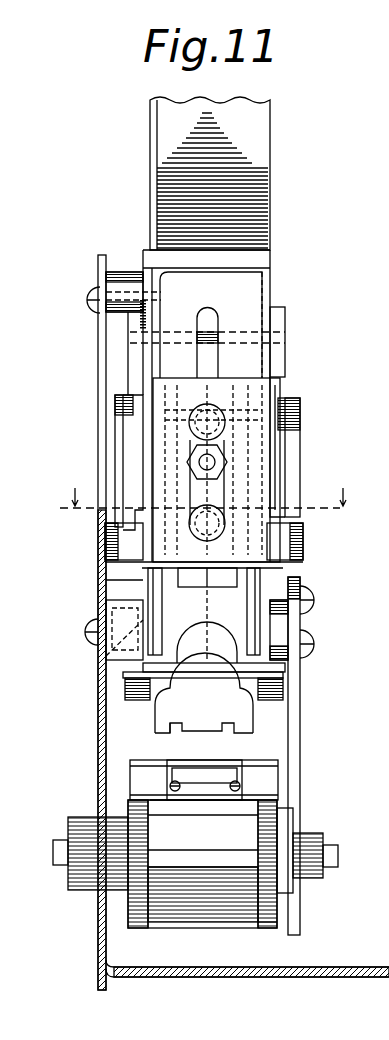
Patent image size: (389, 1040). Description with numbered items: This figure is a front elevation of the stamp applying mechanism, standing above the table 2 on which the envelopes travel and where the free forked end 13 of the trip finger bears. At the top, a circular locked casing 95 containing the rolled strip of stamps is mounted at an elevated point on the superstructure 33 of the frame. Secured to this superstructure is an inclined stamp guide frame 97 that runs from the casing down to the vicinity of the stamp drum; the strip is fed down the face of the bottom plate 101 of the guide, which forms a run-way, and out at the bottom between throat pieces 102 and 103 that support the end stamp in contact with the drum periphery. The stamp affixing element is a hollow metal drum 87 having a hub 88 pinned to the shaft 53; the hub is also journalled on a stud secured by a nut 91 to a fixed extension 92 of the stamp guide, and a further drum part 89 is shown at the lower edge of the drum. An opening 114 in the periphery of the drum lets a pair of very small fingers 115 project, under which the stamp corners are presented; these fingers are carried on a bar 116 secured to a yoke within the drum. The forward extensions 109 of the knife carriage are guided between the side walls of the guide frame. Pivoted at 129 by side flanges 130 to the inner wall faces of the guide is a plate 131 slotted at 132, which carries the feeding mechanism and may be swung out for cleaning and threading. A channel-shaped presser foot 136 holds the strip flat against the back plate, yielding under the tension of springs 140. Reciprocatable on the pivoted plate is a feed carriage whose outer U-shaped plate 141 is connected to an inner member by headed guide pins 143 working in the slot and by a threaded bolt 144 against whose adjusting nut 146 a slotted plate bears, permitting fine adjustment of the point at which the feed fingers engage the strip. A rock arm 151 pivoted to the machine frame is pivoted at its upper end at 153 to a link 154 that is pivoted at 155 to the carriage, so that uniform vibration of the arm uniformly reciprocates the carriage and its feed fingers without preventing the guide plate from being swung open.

The table 2 is at (308, 976).
The free forked end 13 is at (206, 502).
The superstructure 33 is at (106, 276).
The shaft 53 is at (54, 844).
The hollow metal drum 87 is at (276, 917).
The hub 88 is at (77, 820).
The roller flange 89 is at (260, 925).
The nut 91 is at (322, 838).
The fixed extension 92 is at (300, 744).
The circular locked casing 95 is at (268, 200).
The inclined stamp guide frame 97 is at (110, 580).
The bottom plate 101 is at (296, 632).
The throat piece 102 is at (160, 722).
The throat piece 103 is at (228, 714).
The forward extensions 109 is at (123, 688).
The opening 114 is at (276, 778).
The fingers 115 is at (234, 767).
The bar 116 is at (210, 790).
The pivot 129 is at (105, 658).
The side flanges 130 is at (106, 614).
The plate 131 is at (282, 362).
The slot 132 is at (218, 316).
The presser foot 136 is at (160, 612).
The springs 140 is at (260, 586).
The U-shaped plate 141 is at (280, 498).
The headed guide pins 143 is at (212, 409).
The threaded bolt 144 is at (198, 462).
The adjusting nut 146 is at (223, 456).
The rock arm 151 is at (120, 470).
The pivot 153 is at (298, 408).
The link 154 is at (120, 452).
The pivot 155 is at (105, 540).